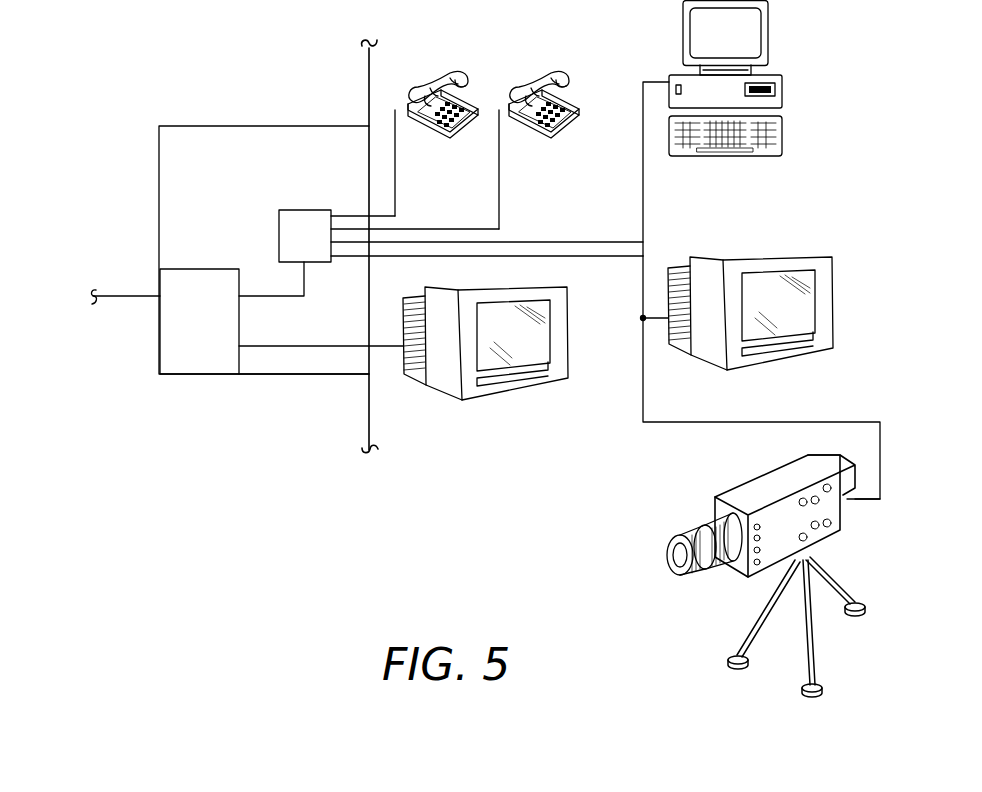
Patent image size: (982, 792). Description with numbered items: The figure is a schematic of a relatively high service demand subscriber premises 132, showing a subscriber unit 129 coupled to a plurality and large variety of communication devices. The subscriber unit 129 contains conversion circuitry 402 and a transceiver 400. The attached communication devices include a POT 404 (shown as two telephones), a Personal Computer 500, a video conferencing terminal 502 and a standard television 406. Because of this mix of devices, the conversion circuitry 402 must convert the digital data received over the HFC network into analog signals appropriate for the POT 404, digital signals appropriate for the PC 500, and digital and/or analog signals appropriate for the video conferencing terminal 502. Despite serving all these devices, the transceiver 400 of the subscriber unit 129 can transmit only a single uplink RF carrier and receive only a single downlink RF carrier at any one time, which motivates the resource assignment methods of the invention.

The subscriber unit 129 is at (240, 126).
The transceiver 400 is at (168, 364).
The conversion circuitry 402 is at (279, 210).
The POT 404 is at (458, 70).
The standard television 406 is at (520, 376).
The Personal Computer (PC) 500 is at (778, 73).
The video conferencing terminal 502 is at (843, 330).
The subscriber premises 132 is at (378, 587).